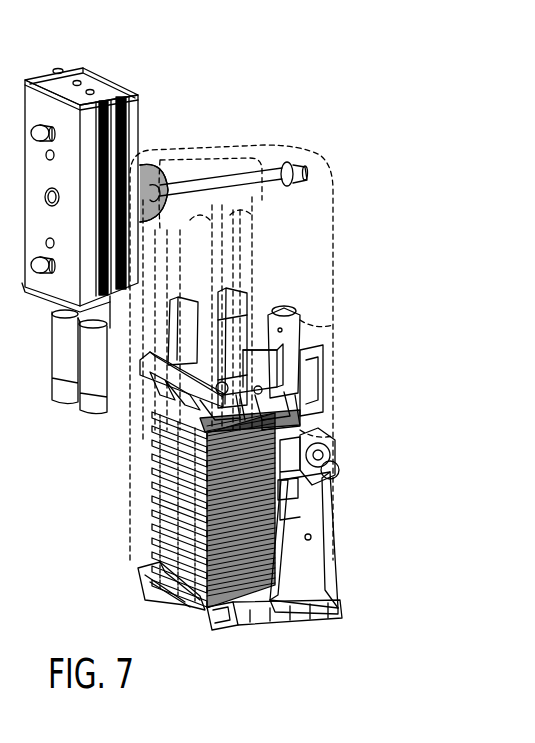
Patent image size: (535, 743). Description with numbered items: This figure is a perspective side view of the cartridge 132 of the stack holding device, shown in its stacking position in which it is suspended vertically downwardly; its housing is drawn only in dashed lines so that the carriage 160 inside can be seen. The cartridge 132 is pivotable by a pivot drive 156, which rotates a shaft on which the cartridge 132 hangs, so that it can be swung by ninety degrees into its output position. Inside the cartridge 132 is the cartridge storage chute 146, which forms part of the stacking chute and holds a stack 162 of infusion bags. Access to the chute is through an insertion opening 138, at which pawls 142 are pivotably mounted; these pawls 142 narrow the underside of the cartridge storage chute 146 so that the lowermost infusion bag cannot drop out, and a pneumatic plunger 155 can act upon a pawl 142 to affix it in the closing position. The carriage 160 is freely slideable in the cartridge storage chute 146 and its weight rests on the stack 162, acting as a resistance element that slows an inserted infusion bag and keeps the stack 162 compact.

The cartridge 132 is at (350, 204).
The insertion opening 138 is at (218, 612).
The pawls 142 is at (140, 575).
The cartridge storage chute 146 is at (318, 410).
The pneumatic plunger 155 is at (322, 450).
The pivot drive 156 is at (135, 130).
The carriage 160 is at (288, 312).
The stack 162 is at (152, 462).